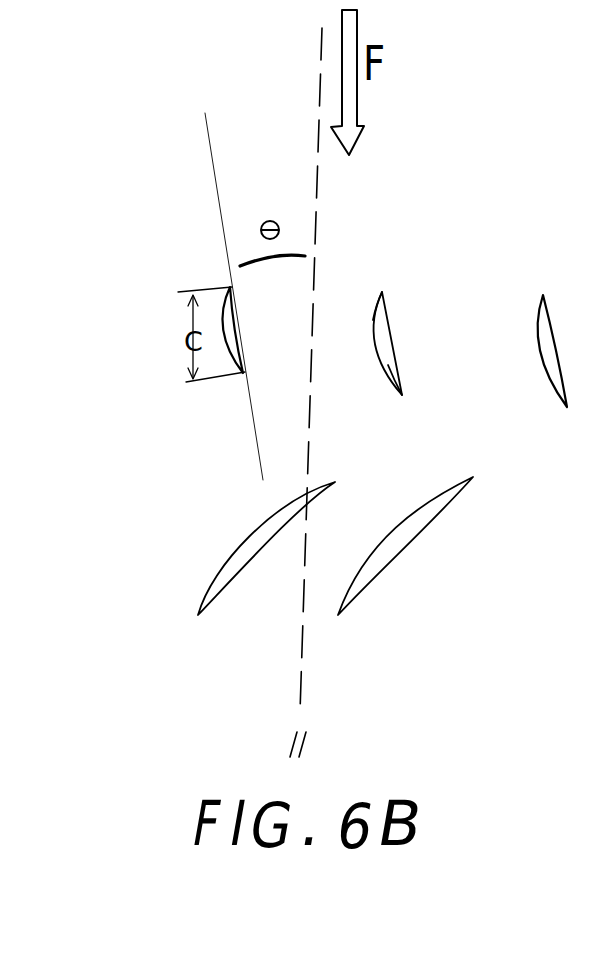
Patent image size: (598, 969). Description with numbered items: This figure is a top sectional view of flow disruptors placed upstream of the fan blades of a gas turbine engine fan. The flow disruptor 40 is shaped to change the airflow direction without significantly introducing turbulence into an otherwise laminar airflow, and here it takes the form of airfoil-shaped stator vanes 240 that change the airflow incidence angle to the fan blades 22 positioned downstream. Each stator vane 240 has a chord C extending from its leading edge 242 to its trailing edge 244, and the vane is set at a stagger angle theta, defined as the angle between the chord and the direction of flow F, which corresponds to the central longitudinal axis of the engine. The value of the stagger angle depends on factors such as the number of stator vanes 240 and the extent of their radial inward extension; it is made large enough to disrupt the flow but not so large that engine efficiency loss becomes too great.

The flow disruptor 40 is at (160, 322).
The fan blades 22 is at (178, 578).
The airfoil-shaped stator vanes 240 is at (391, 343).
The leading edge 242 is at (380, 288).
The trailing edge 244 is at (402, 403).